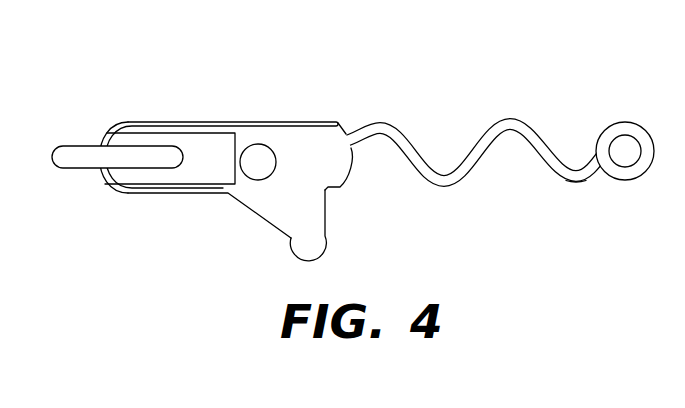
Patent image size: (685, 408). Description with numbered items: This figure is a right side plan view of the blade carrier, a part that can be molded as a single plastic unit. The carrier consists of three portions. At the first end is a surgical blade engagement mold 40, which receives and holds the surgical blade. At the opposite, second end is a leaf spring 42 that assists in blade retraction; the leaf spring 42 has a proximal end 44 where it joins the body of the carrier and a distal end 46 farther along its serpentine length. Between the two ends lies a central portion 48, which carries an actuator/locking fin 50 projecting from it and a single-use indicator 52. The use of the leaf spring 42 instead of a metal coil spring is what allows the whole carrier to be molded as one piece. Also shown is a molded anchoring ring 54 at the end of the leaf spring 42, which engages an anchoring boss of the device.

The surgical blade engagement mold 40 is at (83, 146).
The leaf spring 42 is at (511, 118).
The proximal end of leaf spring 44 is at (347, 133).
The distal end of leaf spring 46 is at (576, 184).
The central portion 48 is at (207, 177).
The actuator/locking fin 50 is at (324, 237).
The single-use indicator 52 is at (257, 155).
The molded anchoring ring 54 is at (627, 122).